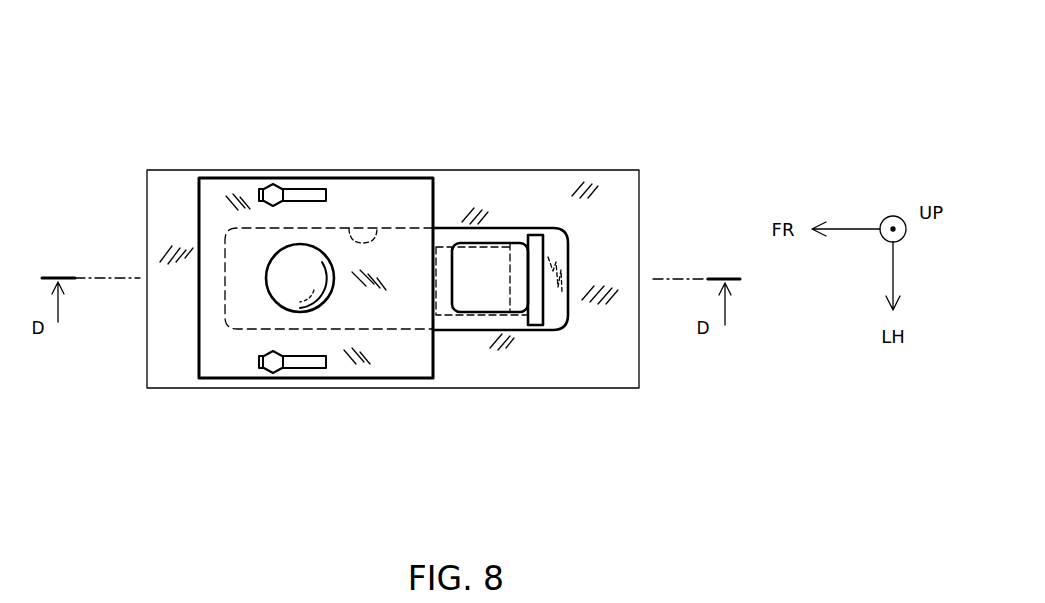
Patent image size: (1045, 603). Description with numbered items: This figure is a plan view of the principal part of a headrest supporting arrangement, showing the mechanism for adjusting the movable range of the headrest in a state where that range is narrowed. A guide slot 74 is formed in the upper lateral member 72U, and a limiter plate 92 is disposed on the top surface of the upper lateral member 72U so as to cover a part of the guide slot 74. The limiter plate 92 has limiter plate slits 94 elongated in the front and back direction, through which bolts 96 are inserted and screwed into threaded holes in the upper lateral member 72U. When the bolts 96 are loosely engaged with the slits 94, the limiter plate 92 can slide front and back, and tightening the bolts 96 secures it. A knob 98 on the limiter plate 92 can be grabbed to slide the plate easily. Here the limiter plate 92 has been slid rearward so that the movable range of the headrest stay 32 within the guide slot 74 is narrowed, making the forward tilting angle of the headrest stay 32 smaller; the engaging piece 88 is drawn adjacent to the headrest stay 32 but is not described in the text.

The upper lateral member 72U is at (607, 185).
The limiter plate 92 is at (356, 187).
The guide slot 74 is at (380, 224).
The headrest stay 32 is at (455, 227).
The engaging piece 88 is at (575, 238).
The knob 98 is at (283, 292).
The limiter plate slit 94 is at (307, 188).
The bolt 96 is at (272, 184).